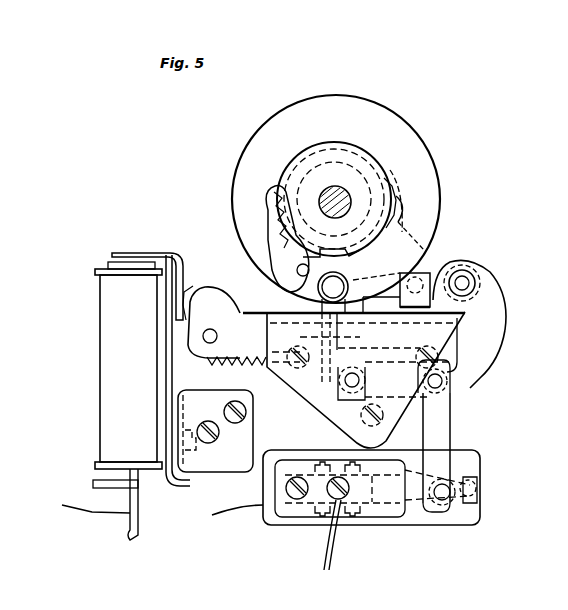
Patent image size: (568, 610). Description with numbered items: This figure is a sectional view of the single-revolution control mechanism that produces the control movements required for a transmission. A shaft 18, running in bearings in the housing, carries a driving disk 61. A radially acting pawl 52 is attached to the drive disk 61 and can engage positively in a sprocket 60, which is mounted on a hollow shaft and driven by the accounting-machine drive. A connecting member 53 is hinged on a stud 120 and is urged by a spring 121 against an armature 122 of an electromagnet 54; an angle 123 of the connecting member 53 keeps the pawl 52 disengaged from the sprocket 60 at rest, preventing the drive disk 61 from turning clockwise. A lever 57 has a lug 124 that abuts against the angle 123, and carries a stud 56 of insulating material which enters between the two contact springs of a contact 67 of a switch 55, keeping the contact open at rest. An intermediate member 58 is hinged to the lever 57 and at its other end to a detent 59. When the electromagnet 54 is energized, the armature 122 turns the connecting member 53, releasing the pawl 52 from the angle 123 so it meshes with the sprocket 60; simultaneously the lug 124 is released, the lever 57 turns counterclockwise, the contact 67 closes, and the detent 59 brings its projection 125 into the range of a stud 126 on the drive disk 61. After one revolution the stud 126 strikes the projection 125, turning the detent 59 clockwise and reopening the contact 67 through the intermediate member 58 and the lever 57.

The shaft 18 is at (344, 198).
The pawl 52 is at (318, 292).
The connecting member 53 is at (178, 262).
The electromagnet 54 is at (125, 422).
The switch 55 is at (292, 508).
The stud 56 is at (442, 500).
The lever 57 is at (440, 428).
The intermediate member 58 is at (471, 342).
The detent 59 is at (437, 266).
The sprocket 60 is at (352, 162).
The driving disk 61 is at (365, 108).
The contact 67 is at (477, 494).
The stud 120 is at (207, 344).
The spring 121 is at (236, 368).
The armature 122 is at (168, 251).
The angle 123 is at (327, 372).
The lug 124 is at (348, 320).
The projection 125 is at (402, 185).
The stud 126 is at (402, 208).